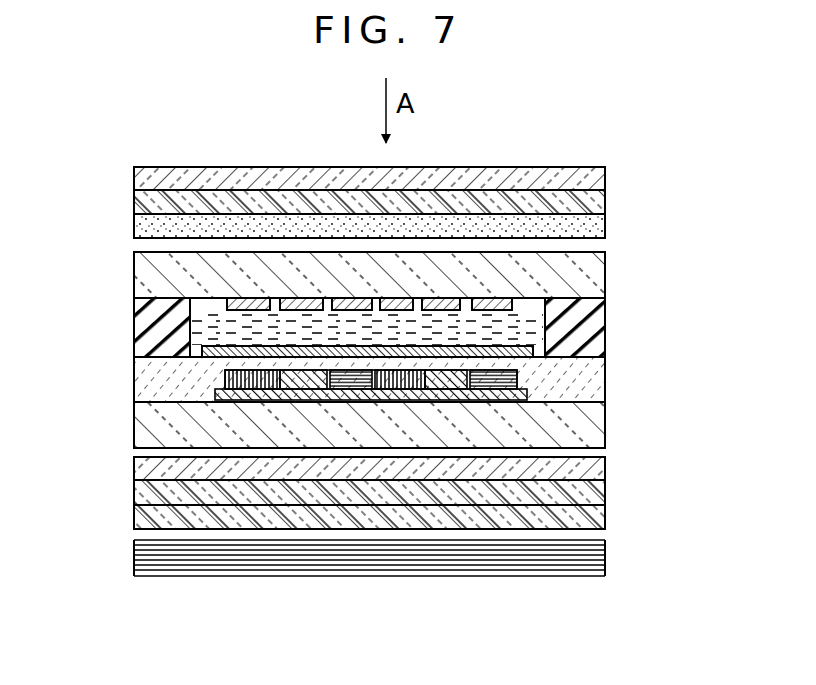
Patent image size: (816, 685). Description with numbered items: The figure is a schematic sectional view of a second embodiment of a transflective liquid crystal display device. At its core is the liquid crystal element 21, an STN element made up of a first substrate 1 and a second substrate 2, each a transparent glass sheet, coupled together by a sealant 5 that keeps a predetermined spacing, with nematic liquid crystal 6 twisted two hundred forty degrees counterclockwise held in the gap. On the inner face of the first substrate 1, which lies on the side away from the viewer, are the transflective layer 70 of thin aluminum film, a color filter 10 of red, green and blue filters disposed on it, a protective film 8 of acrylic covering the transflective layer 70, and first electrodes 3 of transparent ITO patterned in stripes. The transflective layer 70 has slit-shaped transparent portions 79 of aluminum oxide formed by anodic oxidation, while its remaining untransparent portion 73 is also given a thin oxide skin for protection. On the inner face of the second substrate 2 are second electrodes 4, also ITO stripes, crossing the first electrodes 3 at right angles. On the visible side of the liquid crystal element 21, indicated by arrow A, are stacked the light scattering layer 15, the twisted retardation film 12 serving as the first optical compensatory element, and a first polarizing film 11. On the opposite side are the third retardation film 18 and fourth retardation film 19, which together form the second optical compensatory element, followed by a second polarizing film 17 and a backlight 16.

The first substrate 1 is at (605, 418).
The second substrate 2 is at (605, 270).
The first electrodes 3 is at (510, 338).
The second electrodes 4 is at (444, 304).
The sealant 5 is at (605, 318).
The nematic liquid crystal 6 is at (222, 322).
The protective film 8 is at (605, 370).
The color filter 10 is at (328, 366).
The first polarizing film 11 is at (605, 178).
The twisted retardation film 12 is at (605, 201).
The light scattering layer 15 is at (605, 225).
The backlight 16 is at (548, 572).
The second polarizing film 17 is at (605, 520).
The third retardation film 18 is at (605, 465).
The fourth retardation film 19 is at (605, 490).
The liquid crystal element 21 is at (122, 252).
The transflective layer 70 is at (328, 400).
The untransparent portion 73 is at (457, 401).
The transparent portions 79 is at (398, 401).